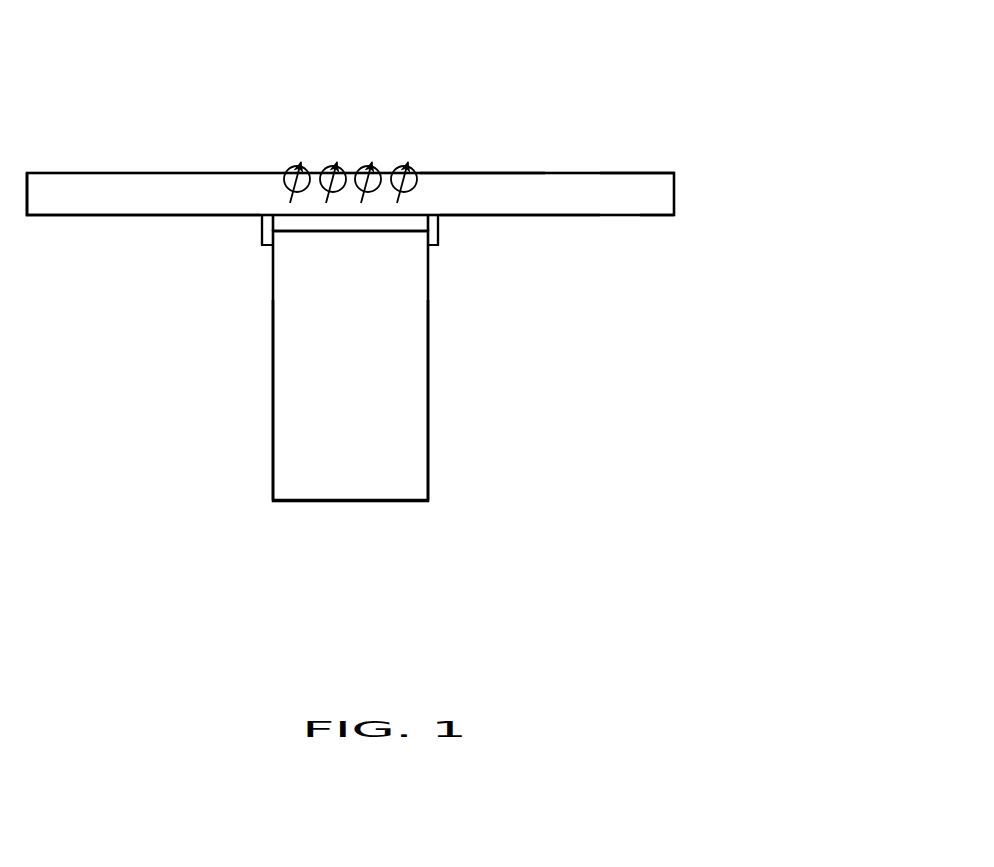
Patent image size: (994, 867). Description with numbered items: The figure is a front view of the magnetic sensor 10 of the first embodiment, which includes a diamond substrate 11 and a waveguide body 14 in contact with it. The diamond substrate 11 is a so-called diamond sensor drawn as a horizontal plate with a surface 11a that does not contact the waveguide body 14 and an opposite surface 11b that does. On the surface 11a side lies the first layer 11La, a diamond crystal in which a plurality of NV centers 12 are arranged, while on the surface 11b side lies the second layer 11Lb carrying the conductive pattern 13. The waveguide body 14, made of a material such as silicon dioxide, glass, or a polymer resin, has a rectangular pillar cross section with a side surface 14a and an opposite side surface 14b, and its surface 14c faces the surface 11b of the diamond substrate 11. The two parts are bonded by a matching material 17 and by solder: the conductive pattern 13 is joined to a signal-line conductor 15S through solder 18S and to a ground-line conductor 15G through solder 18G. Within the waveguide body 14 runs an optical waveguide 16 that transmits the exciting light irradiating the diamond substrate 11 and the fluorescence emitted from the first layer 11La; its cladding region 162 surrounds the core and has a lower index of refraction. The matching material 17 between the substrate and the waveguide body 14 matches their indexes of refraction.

The magnetic sensor 10 is at (603, 76).
The diamond substrate 11 is at (660, 192).
The first layer 11La is at (545, 173).
The surface 11a is at (636, 173).
The second layer 11Lb is at (572, 215).
The surface 11b is at (663, 215).
The NV center 12 is at (338, 135).
The conductive pattern 13 is at (91, 230).
The waveguide body 14 is at (418, 463).
The side surface 14a is at (272, 428).
The side surface 14b is at (430, 376).
The surface of the waveguide body 14c is at (370, 233).
The conductor 15S is at (272, 465).
The conductor 15G is at (430, 414).
The optical waveguide 16 is at (350, 518).
The cladding region 162 is at (311, 480).
The matching material 17 is at (323, 233).
The solder 18S is at (266, 235).
The solder 18G is at (433, 237).